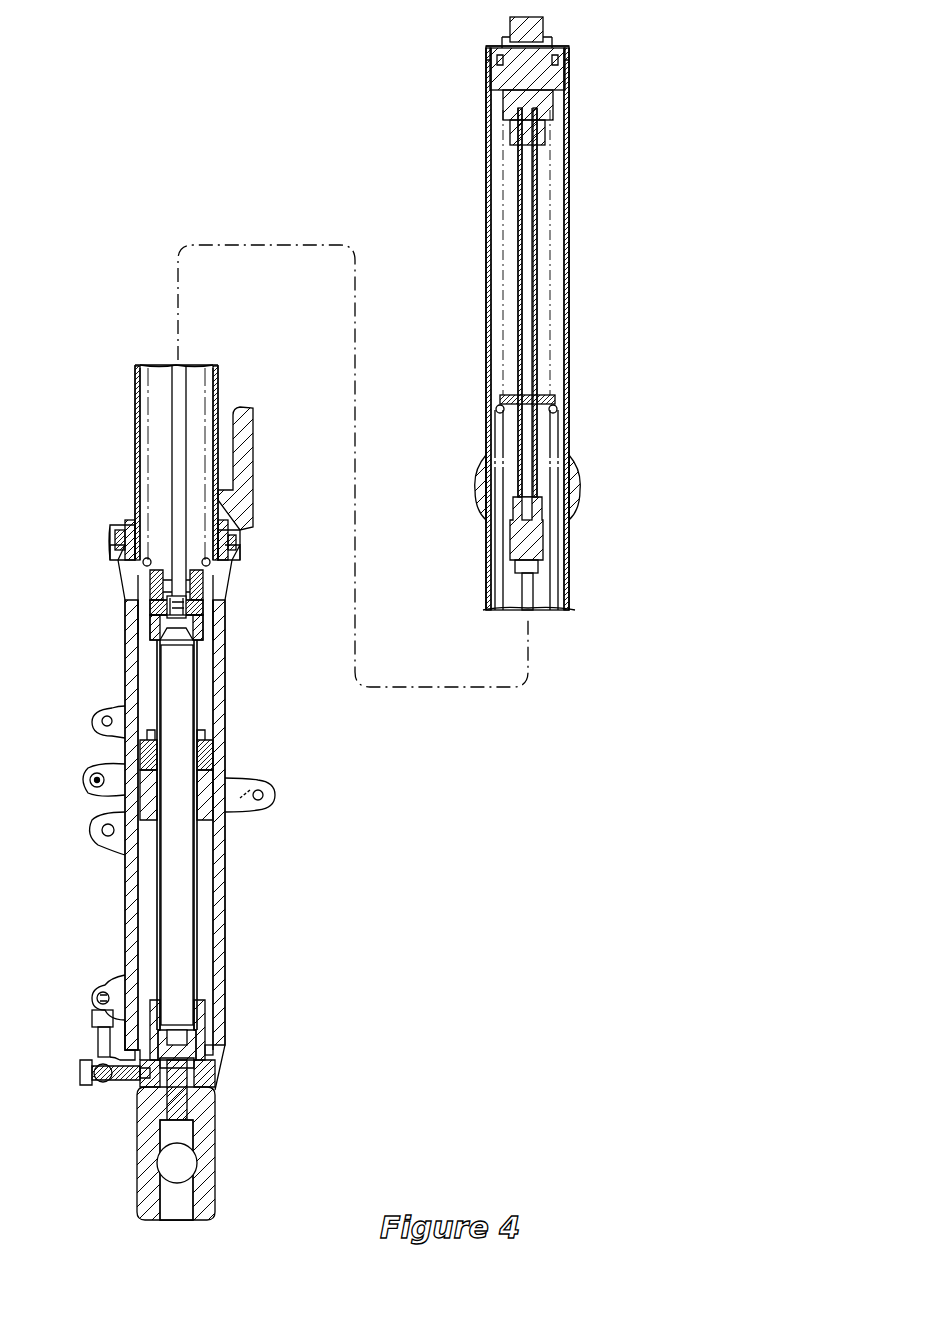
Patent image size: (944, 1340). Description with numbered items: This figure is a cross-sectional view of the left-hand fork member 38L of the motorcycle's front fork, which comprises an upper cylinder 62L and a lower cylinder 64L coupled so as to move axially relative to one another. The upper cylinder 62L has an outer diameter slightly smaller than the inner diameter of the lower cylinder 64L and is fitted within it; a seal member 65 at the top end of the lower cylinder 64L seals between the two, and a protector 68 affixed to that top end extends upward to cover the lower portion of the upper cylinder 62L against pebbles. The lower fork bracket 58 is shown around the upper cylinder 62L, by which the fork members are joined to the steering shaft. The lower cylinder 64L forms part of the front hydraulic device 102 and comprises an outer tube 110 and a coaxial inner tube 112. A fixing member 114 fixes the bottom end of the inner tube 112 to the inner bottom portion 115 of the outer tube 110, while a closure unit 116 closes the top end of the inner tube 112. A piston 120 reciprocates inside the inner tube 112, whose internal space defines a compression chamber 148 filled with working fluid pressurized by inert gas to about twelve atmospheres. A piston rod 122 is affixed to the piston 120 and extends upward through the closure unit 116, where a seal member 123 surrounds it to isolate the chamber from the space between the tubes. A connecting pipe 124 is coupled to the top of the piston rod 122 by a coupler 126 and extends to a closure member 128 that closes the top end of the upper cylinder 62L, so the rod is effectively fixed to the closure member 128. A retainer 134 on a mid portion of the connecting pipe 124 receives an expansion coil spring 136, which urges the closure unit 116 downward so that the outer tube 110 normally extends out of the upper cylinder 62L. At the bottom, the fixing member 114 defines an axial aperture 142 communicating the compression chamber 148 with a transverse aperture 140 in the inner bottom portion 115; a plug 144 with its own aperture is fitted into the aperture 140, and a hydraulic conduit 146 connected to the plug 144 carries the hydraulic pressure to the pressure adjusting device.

The fork member 38L is at (643, 214).
The upper cylinder 62L is at (570, 344).
The closure member 128 is at (558, 41).
The connecting pipe 124 is at (538, 442).
The retainer 134 is at (548, 400).
The lower fork bracket 58 is at (580, 495).
The coupler 126 is at (545, 532).
The piston rod 122 is at (538, 600).
The expansion coil spring 136 is at (542, 590).
The protector 68 is at (255, 478).
The seal member 65 is at (122, 514).
The lower cylinder 64L is at (227, 910).
The outer tube 110 is at (125, 900).
The front hydraulic device 102 is at (206, 672).
The closure unit 116 is at (200, 600).
The seal member 123 is at (155, 598).
The piston 120 is at (158, 652).
The inner tube 112 is at (197, 860).
The compression chamber 148 is at (180, 960).
The fixing member 114 is at (205, 1010).
The inner bottom portion 115 is at (210, 1052).
The aperture 142 is at (200, 1062).
The aperture 140 is at (145, 1087).
The hydraulic conduit 146 is at (98, 1017).
The plug 144 is at (86, 1084).